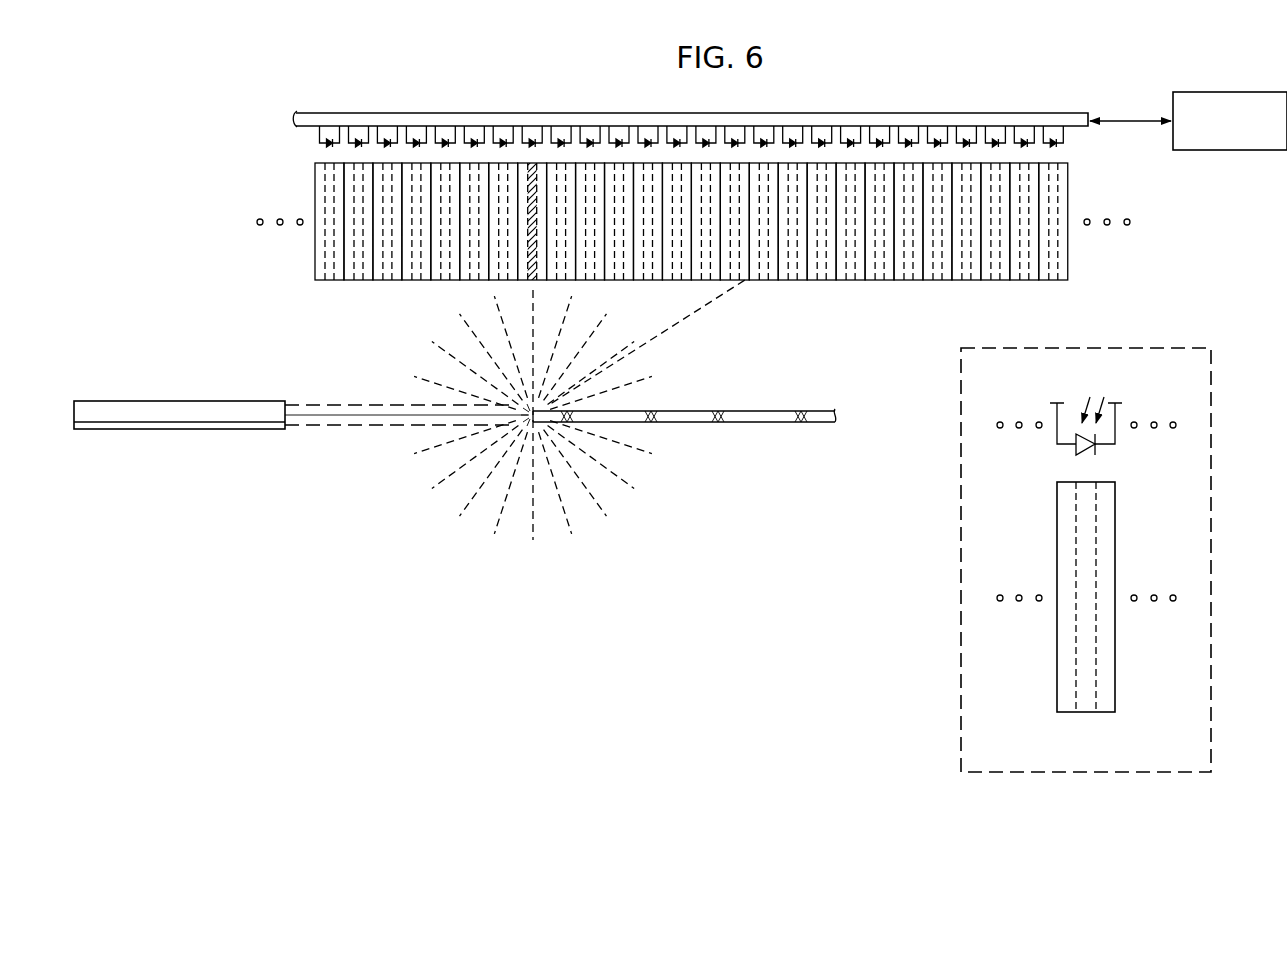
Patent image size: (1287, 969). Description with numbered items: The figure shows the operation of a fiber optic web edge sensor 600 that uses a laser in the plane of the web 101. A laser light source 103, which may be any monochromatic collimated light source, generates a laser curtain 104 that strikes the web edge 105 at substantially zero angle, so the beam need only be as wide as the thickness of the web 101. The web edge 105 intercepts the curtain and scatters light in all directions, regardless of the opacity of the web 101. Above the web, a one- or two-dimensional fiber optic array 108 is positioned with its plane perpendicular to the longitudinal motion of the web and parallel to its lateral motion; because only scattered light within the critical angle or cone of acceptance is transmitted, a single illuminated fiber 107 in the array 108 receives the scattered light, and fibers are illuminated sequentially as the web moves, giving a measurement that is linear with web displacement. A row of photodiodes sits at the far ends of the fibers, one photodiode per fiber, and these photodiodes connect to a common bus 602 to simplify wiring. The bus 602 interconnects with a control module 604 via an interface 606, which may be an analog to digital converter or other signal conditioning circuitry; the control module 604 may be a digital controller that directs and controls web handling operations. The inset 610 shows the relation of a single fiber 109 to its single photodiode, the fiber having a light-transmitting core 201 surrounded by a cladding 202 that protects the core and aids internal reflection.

The web edge sensor 600 is at (454, 57).
The common bus 602 is at (870, 115).
The control module 604 is at (1237, 92).
The interface 606 is at (1130, 119).
The fiber optic array 108 is at (313, 241).
The illuminated fiber 107 is at (531, 281).
The web edge 105 is at (518, 402).
The laser curtain 104 is at (328, 426).
The laser light source 103 is at (152, 430).
The web 101 is at (762, 423).
The inset 610 is at (958, 675).
The single fiber 109 is at (1054, 637).
The core 201 is at (1091, 713).
The cladding 202 is at (1118, 686).